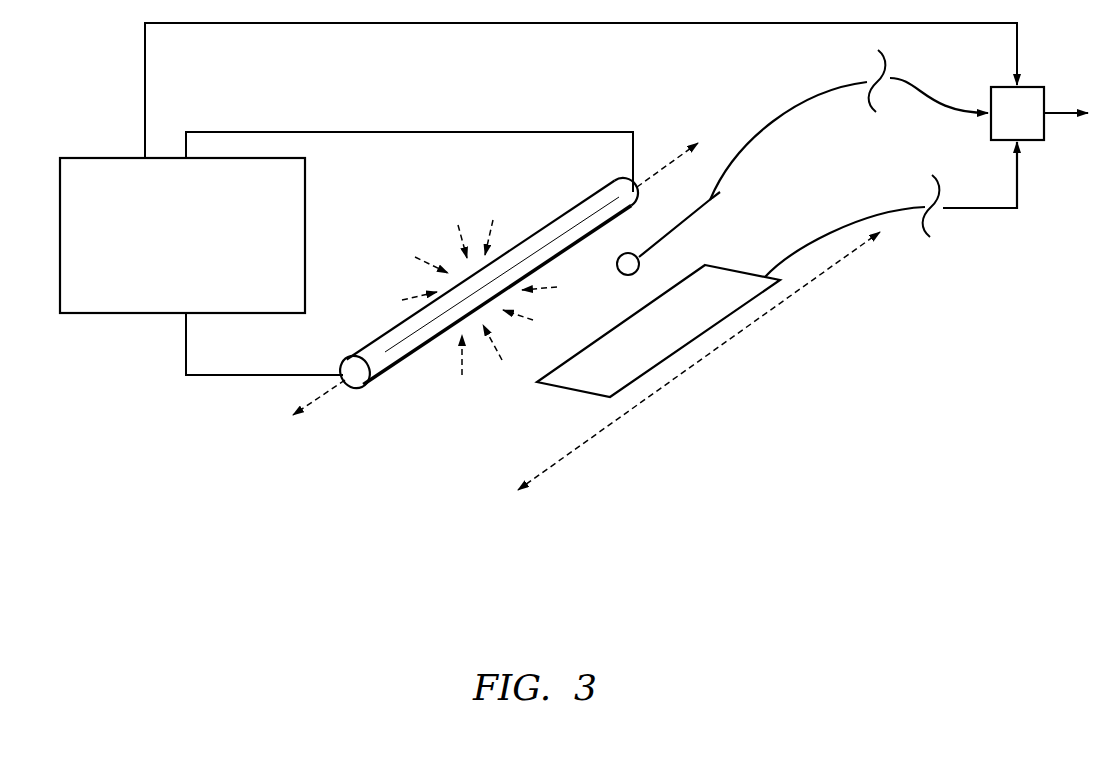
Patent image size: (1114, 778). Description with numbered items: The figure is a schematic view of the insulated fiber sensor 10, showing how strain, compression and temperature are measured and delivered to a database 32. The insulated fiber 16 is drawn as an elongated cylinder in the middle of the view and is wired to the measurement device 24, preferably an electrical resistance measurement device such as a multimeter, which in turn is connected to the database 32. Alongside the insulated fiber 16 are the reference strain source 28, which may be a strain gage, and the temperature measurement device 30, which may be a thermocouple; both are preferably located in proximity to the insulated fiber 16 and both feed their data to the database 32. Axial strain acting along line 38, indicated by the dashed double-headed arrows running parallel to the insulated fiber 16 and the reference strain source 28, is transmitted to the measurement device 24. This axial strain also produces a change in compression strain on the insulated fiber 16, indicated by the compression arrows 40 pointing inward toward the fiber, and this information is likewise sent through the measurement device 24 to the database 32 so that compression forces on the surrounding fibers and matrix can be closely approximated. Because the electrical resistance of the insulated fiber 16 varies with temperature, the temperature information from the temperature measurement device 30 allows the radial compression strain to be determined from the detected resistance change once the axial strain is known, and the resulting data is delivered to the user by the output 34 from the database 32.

The insulated fiber sensor 10 is at (928, 460).
The insulated fiber 16 is at (558, 215).
The measurement device 24 is at (105, 158).
The reference strain source 28 is at (733, 287).
The temperature measurement device 30 is at (685, 227).
The database 32 is at (1027, 93).
The output 34 is at (1063, 108).
The line of axial strain 38 is at (672, 157).
The compression arrows 40 is at (462, 237).